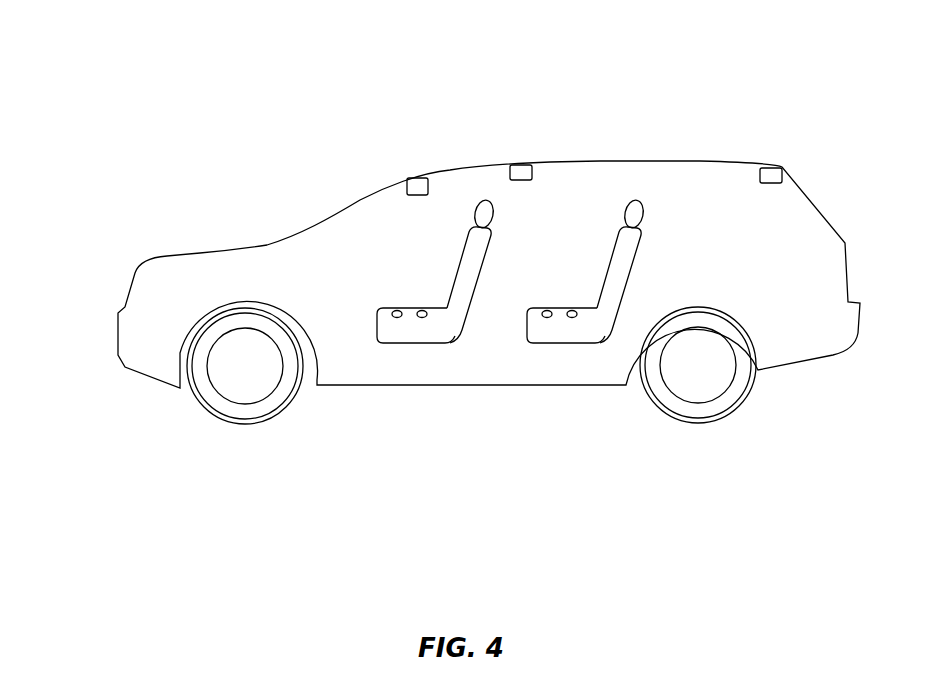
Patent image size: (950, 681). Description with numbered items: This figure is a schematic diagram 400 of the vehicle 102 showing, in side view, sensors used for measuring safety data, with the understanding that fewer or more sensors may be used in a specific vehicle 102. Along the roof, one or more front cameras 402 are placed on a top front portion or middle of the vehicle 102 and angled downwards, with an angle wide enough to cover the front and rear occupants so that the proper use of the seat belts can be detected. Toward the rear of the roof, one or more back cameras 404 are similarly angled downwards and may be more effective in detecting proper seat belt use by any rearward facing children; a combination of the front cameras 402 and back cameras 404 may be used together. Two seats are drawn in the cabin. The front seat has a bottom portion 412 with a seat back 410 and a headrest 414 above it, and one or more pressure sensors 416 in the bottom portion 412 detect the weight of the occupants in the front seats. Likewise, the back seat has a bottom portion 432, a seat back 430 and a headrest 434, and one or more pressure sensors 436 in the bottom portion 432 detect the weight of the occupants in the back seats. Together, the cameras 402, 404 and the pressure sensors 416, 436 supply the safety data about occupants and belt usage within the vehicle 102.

The schematic diagram 400 is at (88, 76).
The vehicle 102 is at (198, 267).
The front camera 402 is at (418, 179).
The back camera 404 is at (768, 168).
The front seat cushion 410 is at (402, 332).
The bottom portion of the front seats 412 is at (442, 332).
The front seat headrest 414 is at (496, 229).
The pressure sensor 416 is at (400, 307).
The rear seat cushion 430 is at (553, 332).
The bottom portion of the back seats 432 is at (592, 332).
The rear seat headrest 434 is at (646, 229).
The pressure sensor 436 is at (552, 307).